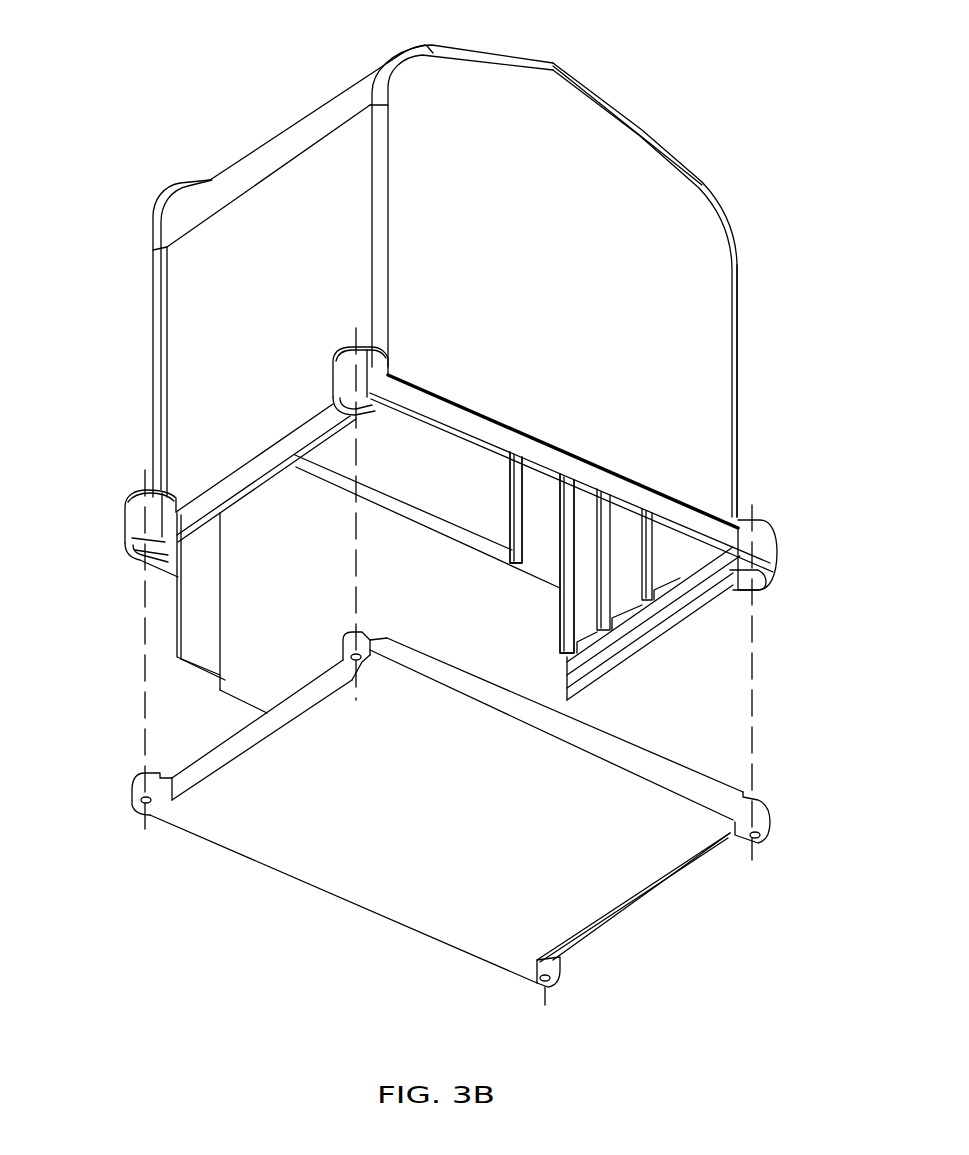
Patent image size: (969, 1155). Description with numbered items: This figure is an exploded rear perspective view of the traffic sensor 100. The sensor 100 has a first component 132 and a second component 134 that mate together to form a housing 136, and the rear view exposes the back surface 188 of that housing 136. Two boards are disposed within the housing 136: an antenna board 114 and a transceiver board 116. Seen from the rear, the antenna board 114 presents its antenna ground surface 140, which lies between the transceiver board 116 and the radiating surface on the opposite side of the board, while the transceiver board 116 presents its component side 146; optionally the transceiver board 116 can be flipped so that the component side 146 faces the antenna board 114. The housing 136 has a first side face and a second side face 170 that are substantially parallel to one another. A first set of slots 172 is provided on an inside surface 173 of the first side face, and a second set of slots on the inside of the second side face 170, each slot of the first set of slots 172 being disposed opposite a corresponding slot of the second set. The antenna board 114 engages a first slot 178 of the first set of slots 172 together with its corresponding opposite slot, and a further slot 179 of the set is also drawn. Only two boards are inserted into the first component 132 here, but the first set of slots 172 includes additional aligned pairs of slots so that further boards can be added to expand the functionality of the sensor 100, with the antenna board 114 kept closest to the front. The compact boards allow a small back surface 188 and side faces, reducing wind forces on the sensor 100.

The sensor 100 is at (251, 92).
The first component 132 is at (741, 360).
The housing 136 is at (607, 140).
The back surface 188 is at (660, 268).
The second side face 170 is at (190, 343).
The antenna board 114 is at (372, 485).
The first set of slots 172 is at (572, 535).
The first slot 178 is at (503, 512).
The guide post 179 is at (558, 548).
The inside surface 173 is at (622, 575).
The antenna ground surface 140 is at (188, 625).
The component side 146 is at (242, 663).
The transceiver board 116 is at (567, 702).
The second component 134 is at (610, 920).